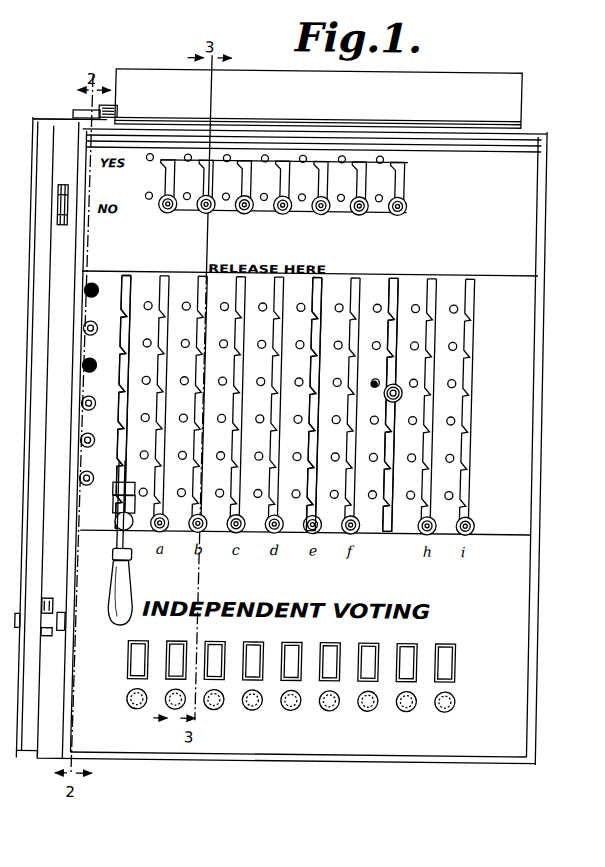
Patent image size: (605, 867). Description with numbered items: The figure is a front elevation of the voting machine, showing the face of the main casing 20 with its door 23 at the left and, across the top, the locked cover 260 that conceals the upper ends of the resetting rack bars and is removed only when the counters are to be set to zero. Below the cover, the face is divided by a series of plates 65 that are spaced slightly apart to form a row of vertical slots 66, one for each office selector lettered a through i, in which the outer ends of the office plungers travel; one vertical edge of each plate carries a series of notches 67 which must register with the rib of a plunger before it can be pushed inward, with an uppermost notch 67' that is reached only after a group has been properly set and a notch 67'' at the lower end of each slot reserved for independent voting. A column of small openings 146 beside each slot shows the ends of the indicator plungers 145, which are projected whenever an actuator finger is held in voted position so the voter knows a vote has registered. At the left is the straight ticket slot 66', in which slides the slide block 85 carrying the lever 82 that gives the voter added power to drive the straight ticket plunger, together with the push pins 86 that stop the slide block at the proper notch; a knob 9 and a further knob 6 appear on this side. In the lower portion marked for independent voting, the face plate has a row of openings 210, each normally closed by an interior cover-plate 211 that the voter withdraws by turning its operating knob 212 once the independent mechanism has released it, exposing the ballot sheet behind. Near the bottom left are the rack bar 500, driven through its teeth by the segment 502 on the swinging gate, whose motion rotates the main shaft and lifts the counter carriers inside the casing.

The cover 260 is at (520, 94).
The main casing 20 is at (548, 236).
The door 23 is at (42, 447).
The push pins 86 is at (102, 287).
The notches 67 is at (296, 415).
The knob 6 is at (92, 405).
The vertical slots 66 is at (316, 405).
The vertical slot 66' is at (108, 401).
The uppermost notch 67' is at (339, 387).
The notch at lower end of slot 67'' is at (387, 429).
The plates 65 is at (468, 367).
The openings 146 is at (426, 297).
The knob 9 is at (410, 386).
The indicator plunger 145 is at (382, 382).
The slide block 85 is at (131, 482).
The lever 82 is at (148, 576).
The segment 502 is at (59, 622).
The rack bar 500 is at (79, 622).
The cover-plate 211 is at (309, 649).
The openings 210 is at (472, 658).
The operating knob 212 is at (471, 697).